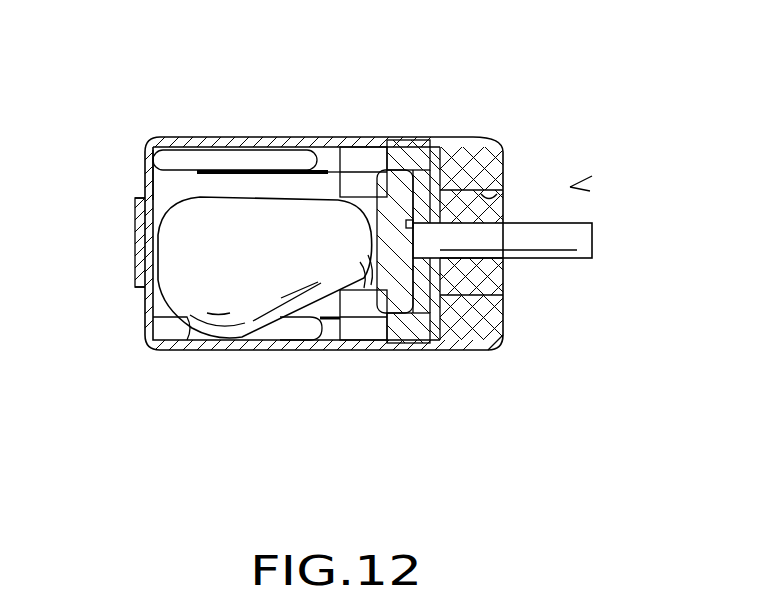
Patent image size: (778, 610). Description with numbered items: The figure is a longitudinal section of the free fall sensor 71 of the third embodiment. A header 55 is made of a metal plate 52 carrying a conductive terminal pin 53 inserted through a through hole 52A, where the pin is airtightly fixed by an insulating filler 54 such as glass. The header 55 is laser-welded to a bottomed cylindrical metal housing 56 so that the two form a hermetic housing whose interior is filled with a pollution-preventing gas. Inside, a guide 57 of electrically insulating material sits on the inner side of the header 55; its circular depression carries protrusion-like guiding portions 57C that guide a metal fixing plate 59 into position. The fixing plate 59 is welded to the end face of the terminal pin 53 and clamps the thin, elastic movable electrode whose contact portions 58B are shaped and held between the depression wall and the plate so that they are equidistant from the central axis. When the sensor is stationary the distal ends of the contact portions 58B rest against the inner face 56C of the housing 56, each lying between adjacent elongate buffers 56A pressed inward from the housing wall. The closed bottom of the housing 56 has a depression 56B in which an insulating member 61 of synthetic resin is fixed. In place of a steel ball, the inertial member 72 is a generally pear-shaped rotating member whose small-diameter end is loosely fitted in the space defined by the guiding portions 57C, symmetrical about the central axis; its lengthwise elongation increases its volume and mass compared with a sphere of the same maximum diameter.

The metal plate 52 is at (477, 160).
The through hole 52A is at (508, 200).
The terminal pin 53 is at (520, 238).
The insulating filler 54 is at (478, 272).
The header 55 is at (496, 349).
The metal housing 56 is at (278, 146).
The buffers 56A is at (205, 163).
The depression 56B is at (133, 196).
The inner face 56C is at (172, 192).
The guide 57 is at (415, 140).
The guiding portions 57C is at (367, 158).
The contact portions 58B is at (322, 172).
The fixing plate 59 is at (392, 187).
The insulating member 61 is at (143, 232).
The free fall sensor 71 is at (590, 191).
The inertial member 72 is at (210, 278).